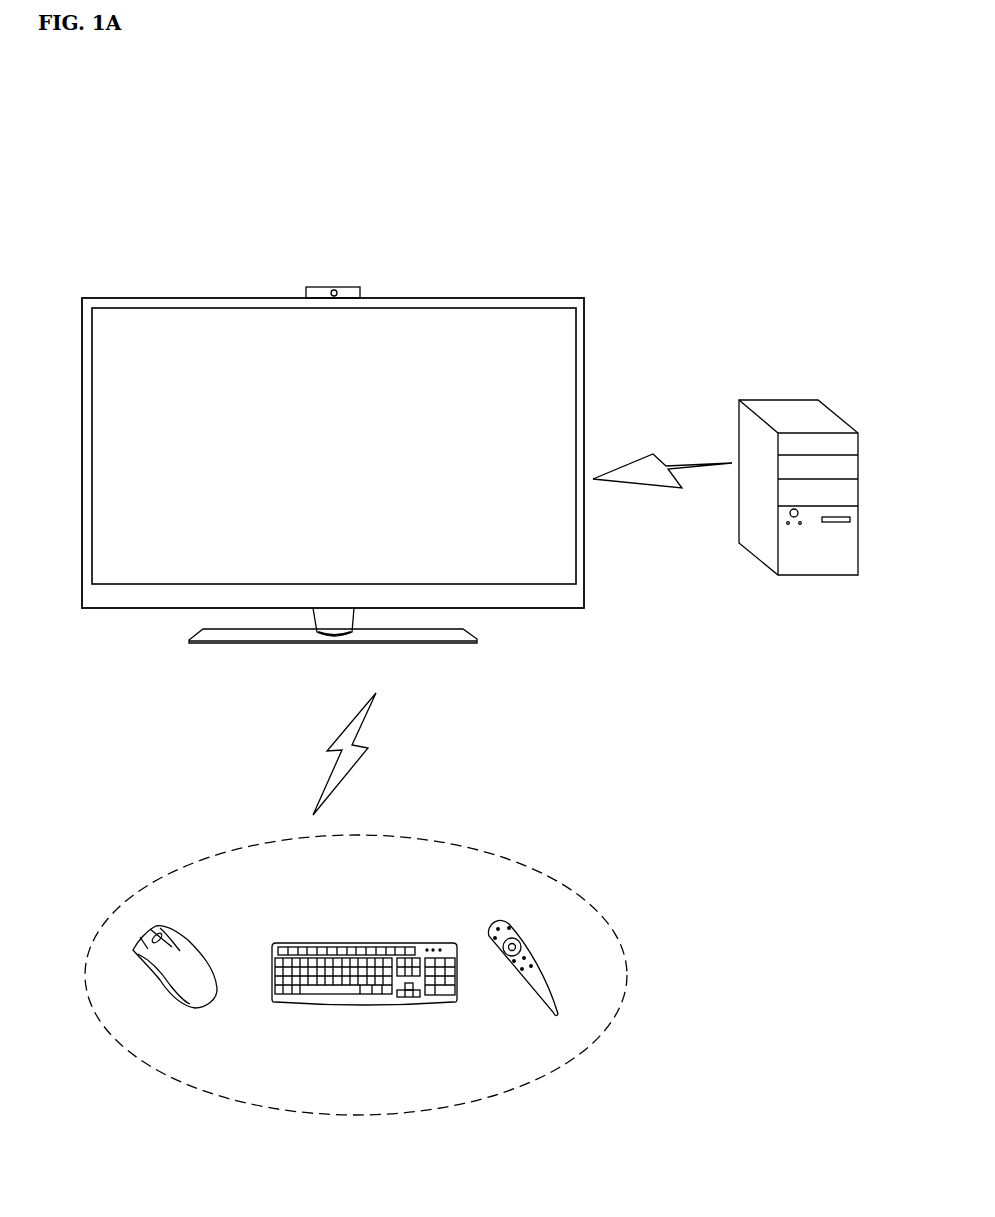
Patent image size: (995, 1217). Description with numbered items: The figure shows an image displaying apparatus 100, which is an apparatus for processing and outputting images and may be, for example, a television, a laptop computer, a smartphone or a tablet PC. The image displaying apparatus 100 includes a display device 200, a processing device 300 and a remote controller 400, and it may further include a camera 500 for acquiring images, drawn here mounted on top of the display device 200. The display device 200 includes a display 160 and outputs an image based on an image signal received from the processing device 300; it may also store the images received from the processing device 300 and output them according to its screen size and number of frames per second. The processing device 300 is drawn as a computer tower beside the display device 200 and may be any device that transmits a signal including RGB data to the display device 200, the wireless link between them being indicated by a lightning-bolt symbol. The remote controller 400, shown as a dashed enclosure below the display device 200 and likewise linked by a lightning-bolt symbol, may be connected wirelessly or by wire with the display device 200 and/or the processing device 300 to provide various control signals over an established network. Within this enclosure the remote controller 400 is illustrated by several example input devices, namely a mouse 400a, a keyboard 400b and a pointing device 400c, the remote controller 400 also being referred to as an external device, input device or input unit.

The image displaying apparatus 100 is at (128, 161).
The display device 200 is at (465, 297).
The display 160 is at (552, 333).
The camera 500 is at (348, 291).
The processing device 300 is at (802, 399).
The remote controller 400 is at (570, 888).
The mouse 400a is at (193, 985).
The keyboard 400b is at (360, 1001).
The pointing device 400c is at (533, 987).